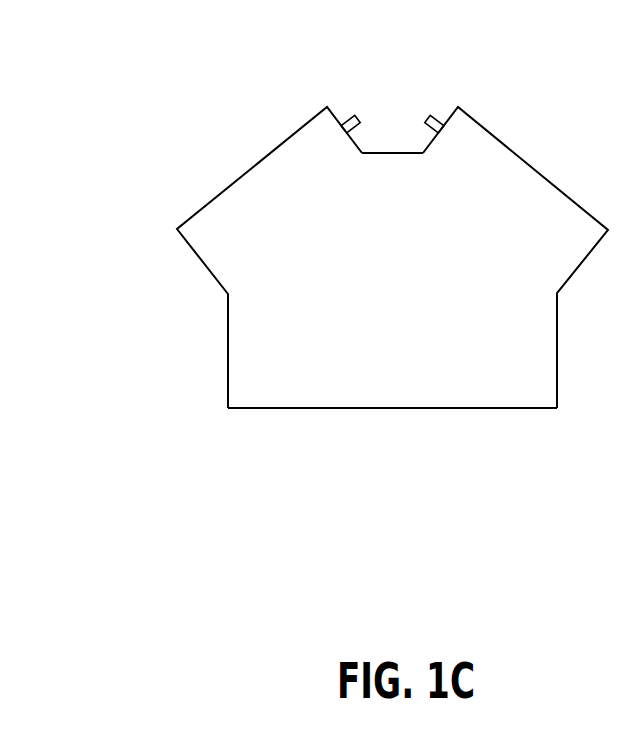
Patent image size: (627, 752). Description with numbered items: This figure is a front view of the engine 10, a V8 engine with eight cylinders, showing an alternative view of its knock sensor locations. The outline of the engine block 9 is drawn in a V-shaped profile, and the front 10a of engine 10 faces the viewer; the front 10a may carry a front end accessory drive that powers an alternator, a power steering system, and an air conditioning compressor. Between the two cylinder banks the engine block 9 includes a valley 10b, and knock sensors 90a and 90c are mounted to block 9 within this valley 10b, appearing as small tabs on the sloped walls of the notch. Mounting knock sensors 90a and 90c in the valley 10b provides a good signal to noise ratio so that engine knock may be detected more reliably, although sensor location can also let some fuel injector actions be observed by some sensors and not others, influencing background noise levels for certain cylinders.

The engine block 9 is at (361, 255).
The engine 10 is at (364, 255).
The front of engine 10a is at (382, 390).
The valley 10b is at (385, 180).
The knock sensor 90a is at (358, 121).
The knock sensor 90c is at (427, 118).